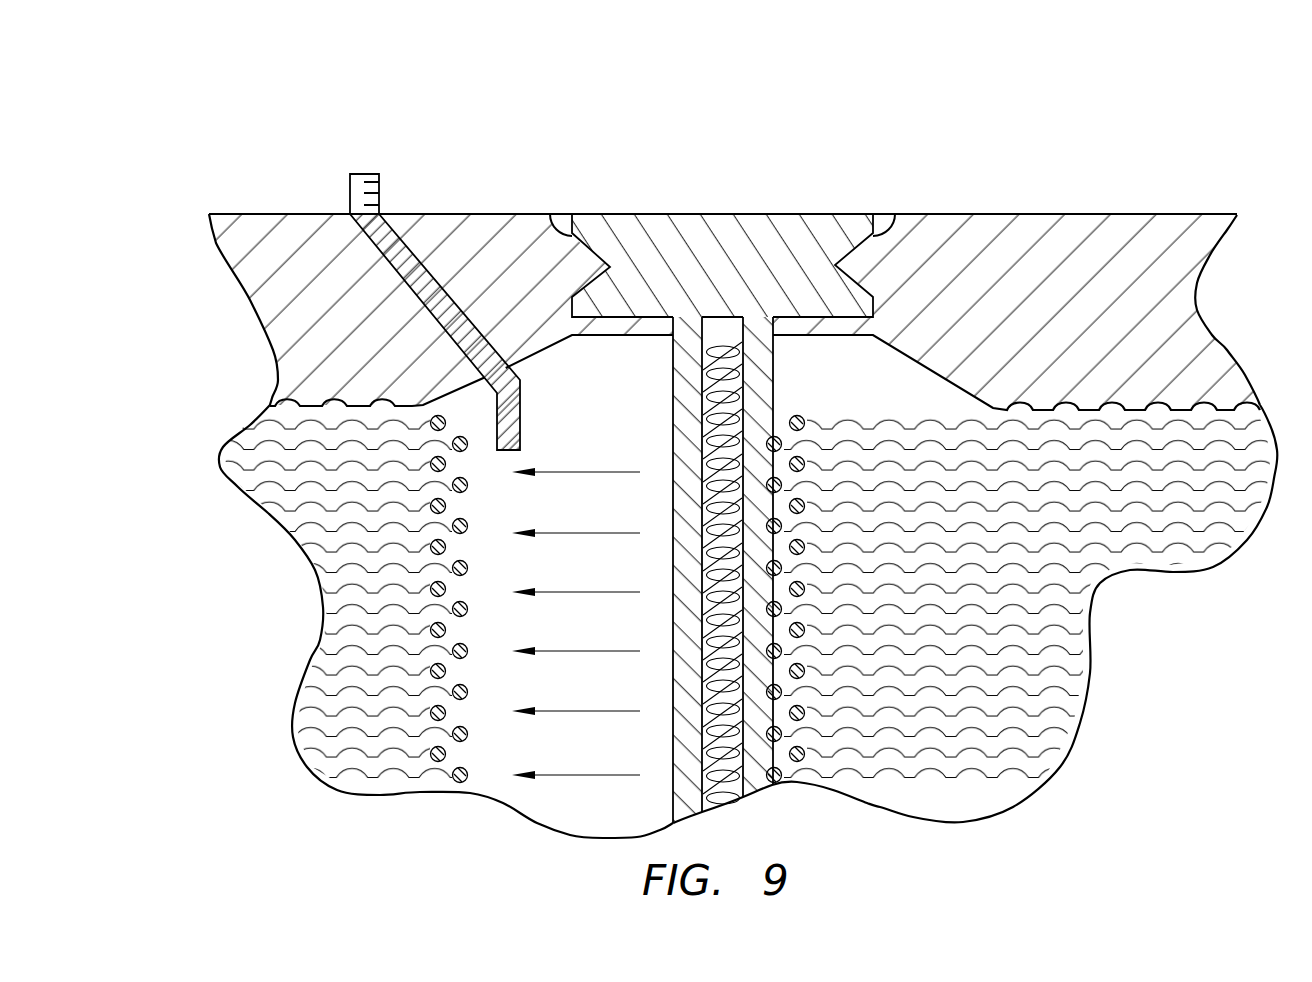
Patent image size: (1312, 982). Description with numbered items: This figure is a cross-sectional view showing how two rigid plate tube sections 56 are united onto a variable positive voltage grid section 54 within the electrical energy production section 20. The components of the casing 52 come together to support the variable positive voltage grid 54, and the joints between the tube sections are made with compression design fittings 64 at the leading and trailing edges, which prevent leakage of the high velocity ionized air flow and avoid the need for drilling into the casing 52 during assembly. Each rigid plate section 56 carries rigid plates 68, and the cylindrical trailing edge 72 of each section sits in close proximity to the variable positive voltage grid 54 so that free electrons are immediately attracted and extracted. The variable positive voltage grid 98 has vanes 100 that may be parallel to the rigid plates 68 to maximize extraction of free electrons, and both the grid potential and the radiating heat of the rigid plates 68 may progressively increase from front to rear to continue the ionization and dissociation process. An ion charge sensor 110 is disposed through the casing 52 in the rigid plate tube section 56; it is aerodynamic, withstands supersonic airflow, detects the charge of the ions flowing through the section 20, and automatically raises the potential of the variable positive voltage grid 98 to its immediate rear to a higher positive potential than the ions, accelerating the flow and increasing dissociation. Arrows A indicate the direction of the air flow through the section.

The electrical energy production section 20 is at (992, 109).
The casing 52 is at (302, 213).
The variable positive voltage grid section 54 is at (692, 213).
The rigid plate tube section 56 is at (442, 213).
The compression design fitting 64 is at (542, 213).
The rigid plate 68 is at (1146, 635).
The cylindrical trailing edge 72 is at (806, 416).
The variable positive voltage grid 98 is at (646, 450).
The vane 100 is at (702, 363).
The ion charge sensor 110 is at (415, 146).
The flow direction A is at (572, 648).